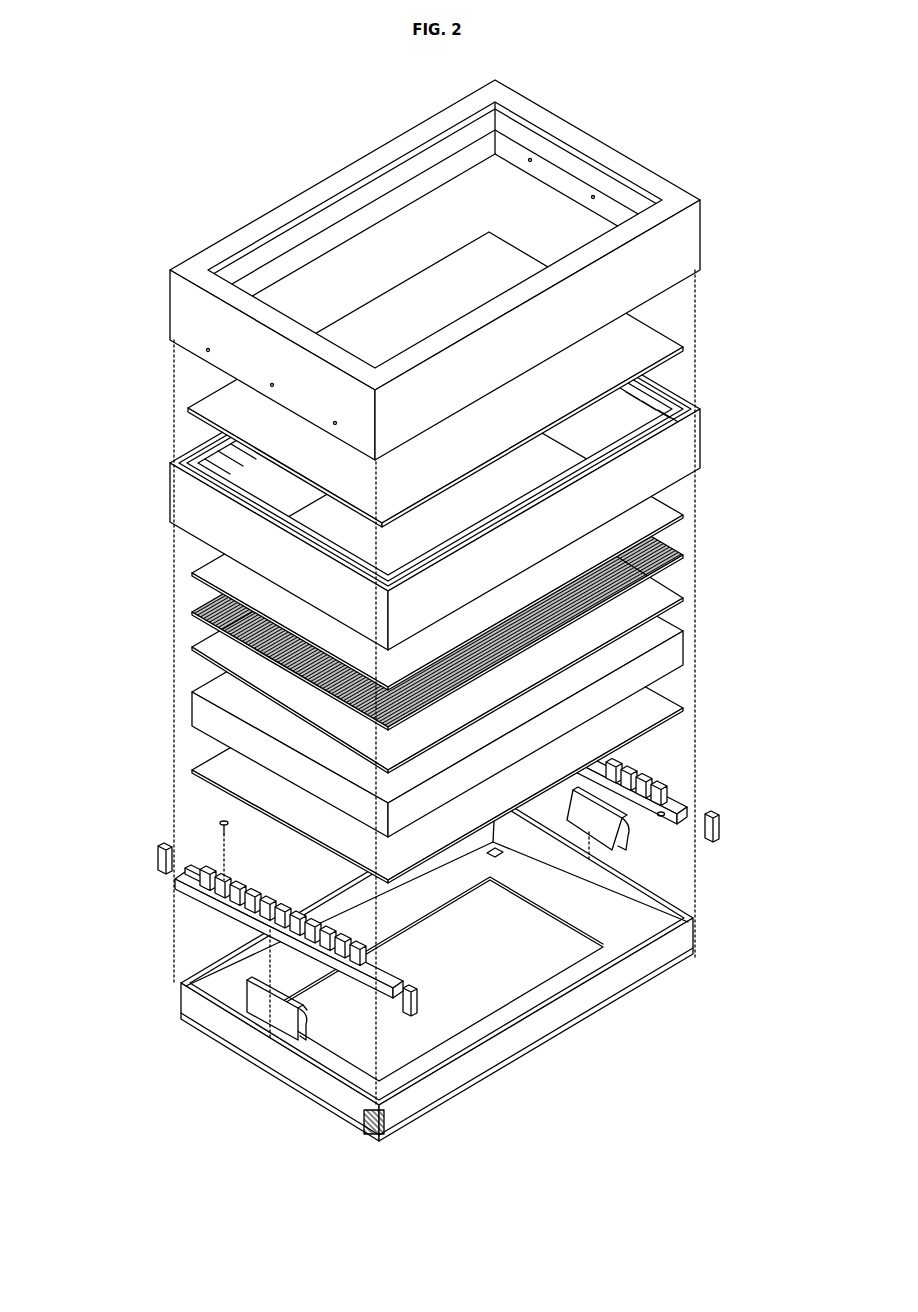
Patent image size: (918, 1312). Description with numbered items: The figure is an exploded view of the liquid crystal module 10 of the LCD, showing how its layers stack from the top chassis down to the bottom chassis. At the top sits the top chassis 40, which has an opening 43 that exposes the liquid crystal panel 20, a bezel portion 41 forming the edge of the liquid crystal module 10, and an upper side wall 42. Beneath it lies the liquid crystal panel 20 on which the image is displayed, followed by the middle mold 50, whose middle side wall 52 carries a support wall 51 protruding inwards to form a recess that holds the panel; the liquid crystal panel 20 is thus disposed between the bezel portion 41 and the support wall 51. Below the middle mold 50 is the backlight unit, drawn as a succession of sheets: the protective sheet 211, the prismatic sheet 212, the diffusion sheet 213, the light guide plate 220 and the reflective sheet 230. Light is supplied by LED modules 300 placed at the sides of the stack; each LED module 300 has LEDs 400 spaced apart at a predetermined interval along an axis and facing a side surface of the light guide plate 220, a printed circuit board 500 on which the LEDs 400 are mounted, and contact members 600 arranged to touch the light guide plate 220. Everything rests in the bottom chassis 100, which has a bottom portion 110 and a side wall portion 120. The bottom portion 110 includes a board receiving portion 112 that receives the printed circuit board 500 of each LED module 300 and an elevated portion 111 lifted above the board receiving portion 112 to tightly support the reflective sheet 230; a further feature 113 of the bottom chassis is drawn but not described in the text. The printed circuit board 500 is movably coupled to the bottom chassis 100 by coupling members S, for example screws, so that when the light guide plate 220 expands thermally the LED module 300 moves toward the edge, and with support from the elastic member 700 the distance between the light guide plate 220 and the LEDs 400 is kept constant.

The liquid crystal module 10 is at (196, 82).
The liquid crystal panel 20 is at (657, 343).
The top chassis 40 is at (390, 270).
The bezel portion 41 is at (222, 288).
The upper side wall 42 is at (185, 333).
The opening 43 is at (276, 313).
The middle mold 50 is at (391, 465).
The support wall 51 is at (195, 455).
The middle side wall 52 is at (185, 510).
The protective sheet 211 is at (683, 517).
The prismatic sheet 212 is at (683, 553).
The diffusion sheet 213 is at (683, 598).
The light guide plate 220 is at (683, 652).
The reflective sheet 230 is at (683, 710).
The LED module 300 is at (397, 870).
The LEDs 400 is at (230, 908).
The printed circuit board 500 is at (198, 874).
The contact member 600 is at (157, 855).
The elastic member 700 is at (262, 1008).
The coupling member S is at (230, 825).
The bottom chassis 100 is at (399, 968).
The bottom portion 110 is at (437, 957).
The elevated portion 111 is at (492, 988).
The board receiving portion 112 is at (613, 933).
The fixing hole 113 is at (498, 857).
The side wall portion 120 is at (323, 1083).